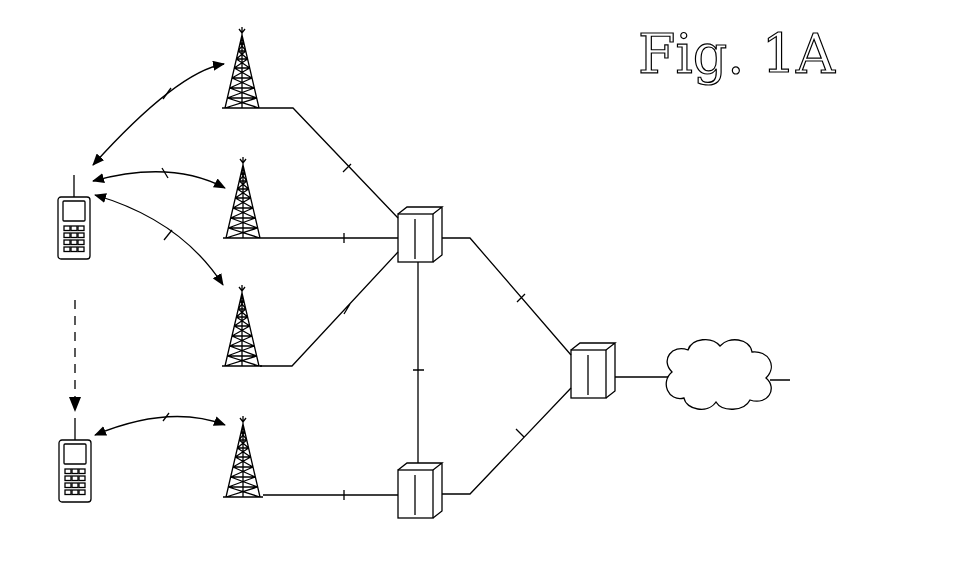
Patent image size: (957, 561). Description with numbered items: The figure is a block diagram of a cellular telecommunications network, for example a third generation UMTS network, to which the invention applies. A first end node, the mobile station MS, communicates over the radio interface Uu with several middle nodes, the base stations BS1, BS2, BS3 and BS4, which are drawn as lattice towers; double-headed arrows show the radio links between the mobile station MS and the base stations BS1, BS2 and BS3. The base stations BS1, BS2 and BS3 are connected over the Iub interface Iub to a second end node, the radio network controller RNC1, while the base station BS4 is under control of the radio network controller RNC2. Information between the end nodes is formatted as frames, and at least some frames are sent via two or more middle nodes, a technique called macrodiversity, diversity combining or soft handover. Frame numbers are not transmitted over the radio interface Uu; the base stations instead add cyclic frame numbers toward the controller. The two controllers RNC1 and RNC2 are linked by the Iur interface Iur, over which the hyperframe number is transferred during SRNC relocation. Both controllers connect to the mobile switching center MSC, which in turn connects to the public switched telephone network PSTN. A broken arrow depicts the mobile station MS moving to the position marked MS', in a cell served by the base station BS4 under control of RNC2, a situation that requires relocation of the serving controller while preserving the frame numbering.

The mobile station MS is at (74, 229).
The mobile station after movement MS' is at (75, 471).
The base station BS1 is at (242, 79).
The base station BS2 is at (243, 209).
The base station BS3 is at (242, 337).
The base station BS4 is at (243, 468).
The radio network controller RNC1 is at (420, 226).
The radio network controller RNC2 is at (420, 503).
The mobile switching center MSC is at (593, 383).
The public switched telephone network PSTN is at (718, 375).
The radio interface Uu is at (158, 114).
The Iub interface Iub is at (330, 163).
The Iur interface Iur is at (431, 362).